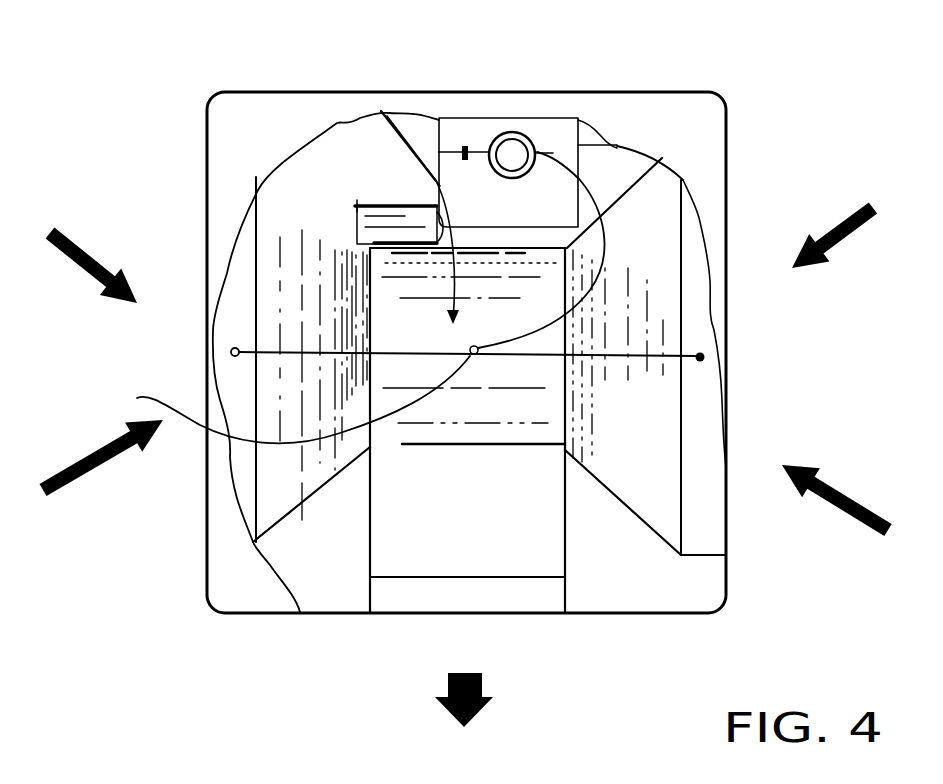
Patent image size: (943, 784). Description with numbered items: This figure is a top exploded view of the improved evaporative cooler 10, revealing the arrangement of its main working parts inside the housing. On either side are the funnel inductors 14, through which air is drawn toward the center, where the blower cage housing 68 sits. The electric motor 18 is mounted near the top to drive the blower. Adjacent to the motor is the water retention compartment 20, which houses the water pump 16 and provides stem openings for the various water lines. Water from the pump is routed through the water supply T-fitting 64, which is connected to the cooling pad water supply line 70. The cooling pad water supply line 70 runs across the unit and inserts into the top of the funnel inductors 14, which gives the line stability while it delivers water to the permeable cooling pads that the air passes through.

The evaporative cooler 10 is at (461, 92).
The funnel inductors 14 is at (287, 205).
The water pump 16 is at (518, 133).
The electric motor 18 is at (377, 205).
The water retention compartment 20 is at (578, 166).
The water supply T-fitting 64 is at (357, 297).
The blower cage housing 68 is at (437, 183).
The cooling pad water supply line 70 is at (235, 354).